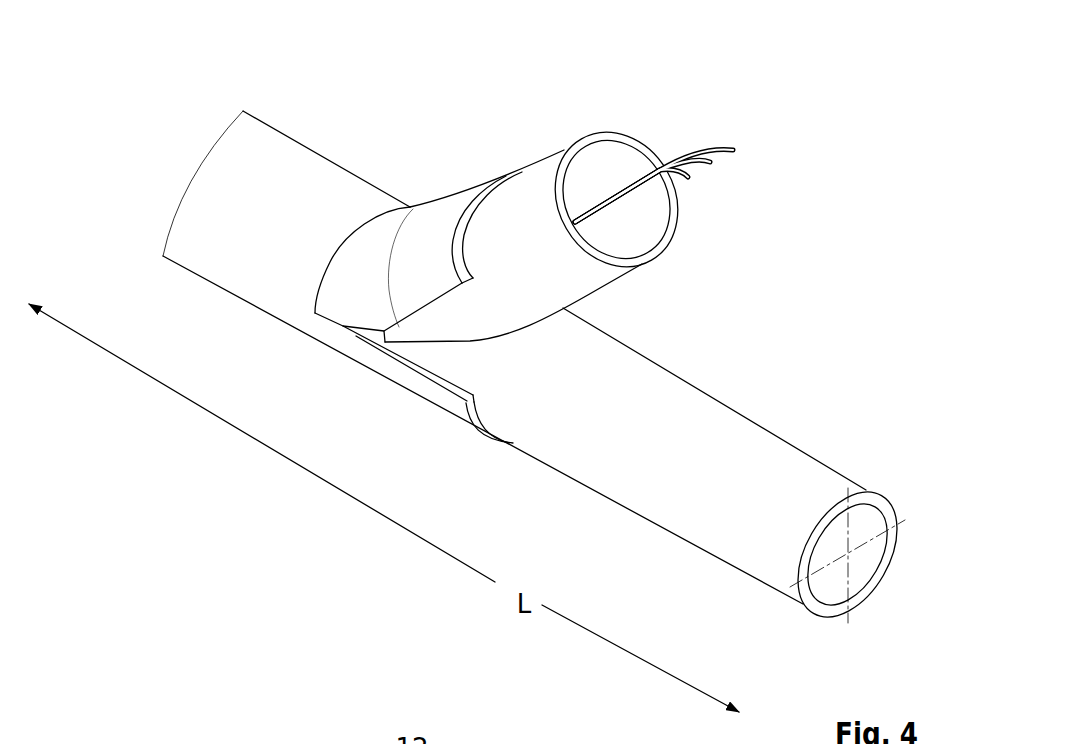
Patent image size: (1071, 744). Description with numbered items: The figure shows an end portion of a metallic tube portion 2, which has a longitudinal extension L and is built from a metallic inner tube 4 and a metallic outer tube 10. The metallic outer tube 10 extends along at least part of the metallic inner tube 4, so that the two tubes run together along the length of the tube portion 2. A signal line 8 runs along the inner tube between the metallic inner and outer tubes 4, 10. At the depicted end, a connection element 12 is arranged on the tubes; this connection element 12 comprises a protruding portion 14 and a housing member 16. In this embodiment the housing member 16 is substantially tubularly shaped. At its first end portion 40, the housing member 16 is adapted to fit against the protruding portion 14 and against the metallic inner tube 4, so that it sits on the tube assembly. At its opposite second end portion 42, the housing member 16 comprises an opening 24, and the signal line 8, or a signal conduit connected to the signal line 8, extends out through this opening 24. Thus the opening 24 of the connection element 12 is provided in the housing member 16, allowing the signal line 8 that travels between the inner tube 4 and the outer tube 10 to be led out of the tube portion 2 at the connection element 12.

The metallic tube portion 2 is at (801, 144).
The metallic inner tube 4 is at (690, 527).
The signal line 8 is at (688, 144).
The metallic outer tube 10 is at (247, 247).
The connection element 12 is at (557, 181).
The protruding portion 14 is at (433, 227).
The housing member 16 is at (528, 185).
The opening 24 is at (654, 208).
The first end portion 40 is at (452, 359).
The second end portion 42 is at (641, 279).